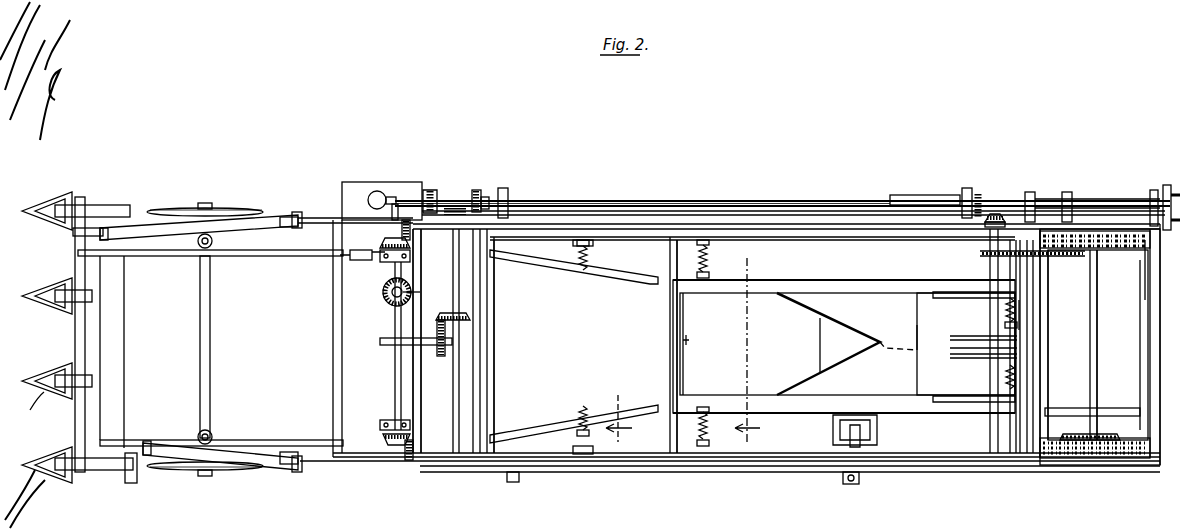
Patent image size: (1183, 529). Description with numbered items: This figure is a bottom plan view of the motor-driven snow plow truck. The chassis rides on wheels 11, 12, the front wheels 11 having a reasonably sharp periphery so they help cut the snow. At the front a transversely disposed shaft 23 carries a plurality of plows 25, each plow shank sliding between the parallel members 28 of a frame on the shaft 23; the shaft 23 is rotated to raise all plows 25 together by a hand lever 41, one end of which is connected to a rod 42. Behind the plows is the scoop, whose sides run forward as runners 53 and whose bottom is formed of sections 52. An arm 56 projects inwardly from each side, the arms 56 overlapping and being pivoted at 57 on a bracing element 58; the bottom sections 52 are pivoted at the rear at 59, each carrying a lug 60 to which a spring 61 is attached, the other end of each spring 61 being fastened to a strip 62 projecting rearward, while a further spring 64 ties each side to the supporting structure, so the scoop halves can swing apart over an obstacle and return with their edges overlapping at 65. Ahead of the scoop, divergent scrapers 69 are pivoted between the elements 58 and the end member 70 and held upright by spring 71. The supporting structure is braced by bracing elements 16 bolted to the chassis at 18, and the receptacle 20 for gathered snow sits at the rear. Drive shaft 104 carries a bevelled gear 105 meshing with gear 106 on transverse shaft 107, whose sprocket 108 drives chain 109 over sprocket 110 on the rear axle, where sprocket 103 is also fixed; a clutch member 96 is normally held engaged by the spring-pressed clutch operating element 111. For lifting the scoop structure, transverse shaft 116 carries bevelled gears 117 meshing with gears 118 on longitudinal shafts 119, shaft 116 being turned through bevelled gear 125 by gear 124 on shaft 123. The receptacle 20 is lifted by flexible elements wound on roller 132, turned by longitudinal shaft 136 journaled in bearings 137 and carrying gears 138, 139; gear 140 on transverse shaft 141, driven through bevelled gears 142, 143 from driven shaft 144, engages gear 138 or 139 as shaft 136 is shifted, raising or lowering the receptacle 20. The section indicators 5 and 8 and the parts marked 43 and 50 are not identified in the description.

The section line 5 is at (619, 417).
The section line 8 is at (747, 345).
The front wheels 11 is at (176, 207).
The wheels 12 is at (1120, 462).
The bracing elements 16 is at (690, 472).
The bolted connection 18 is at (520, 482).
The receptacle 20 is at (1100, 347).
The transversely disposed shaft 23 is at (75, 326).
The plows 25 is at (33, 406).
The parallel members 28 is at (95, 470).
The hand lever 41 is at (352, 252).
The rod 42 is at (178, 250).
The clamp block 43 is at (73, 236).
The carriage box 50 is at (844, 346).
The bottom section 52 is at (845, 318).
The runners 53 is at (895, 280).
The arm 56 is at (677, 358).
The pivot 57 is at (690, 346).
The bracing element 58 is at (665, 250).
The pivot 59 is at (995, 356).
The lug 60 is at (1010, 326).
The spring 61 is at (1012, 318).
The strip 62 is at (1015, 390).
The spring 64 is at (692, 426).
The overlap 65 is at (893, 342).
The scrapers 69 is at (620, 276).
The end member 70 is at (497, 396).
The spring 71 is at (575, 247).
The clutch member 96 is at (840, 430).
The sprocket 103 is at (1060, 462).
The drive shaft 104 is at (905, 198).
The bevelled gear 105 is at (978, 192).
The gear 106 is at (998, 212).
The transversely disposed shaft 107 is at (985, 262).
The sprocket 108 is at (980, 253).
The chain 109 is at (1052, 258).
The sprocket 110 is at (1108, 256).
The clutch operating element 111 is at (865, 482).
The transversely disposed shaft 116 is at (395, 370).
The bevelled gear 117 is at (385, 438).
The gears 118 is at (400, 235).
The parallel shafts 119 is at (433, 235).
The shaft 123 is at (410, 296).
The gear 124 is at (385, 289).
The bevelled gear 125 is at (392, 296).
The roller 132 is at (1112, 199).
The shaft 136 is at (740, 201).
The bearings 137 is at (508, 190).
The gear 138 is at (435, 190).
The gear 139 is at (480, 195).
The gear 140 is at (452, 205).
The transverse shaft 141 is at (465, 371).
The bevelled gear 142 is at (465, 332).
The gear 143 is at (450, 353).
The driven shaft 144 is at (383, 343).